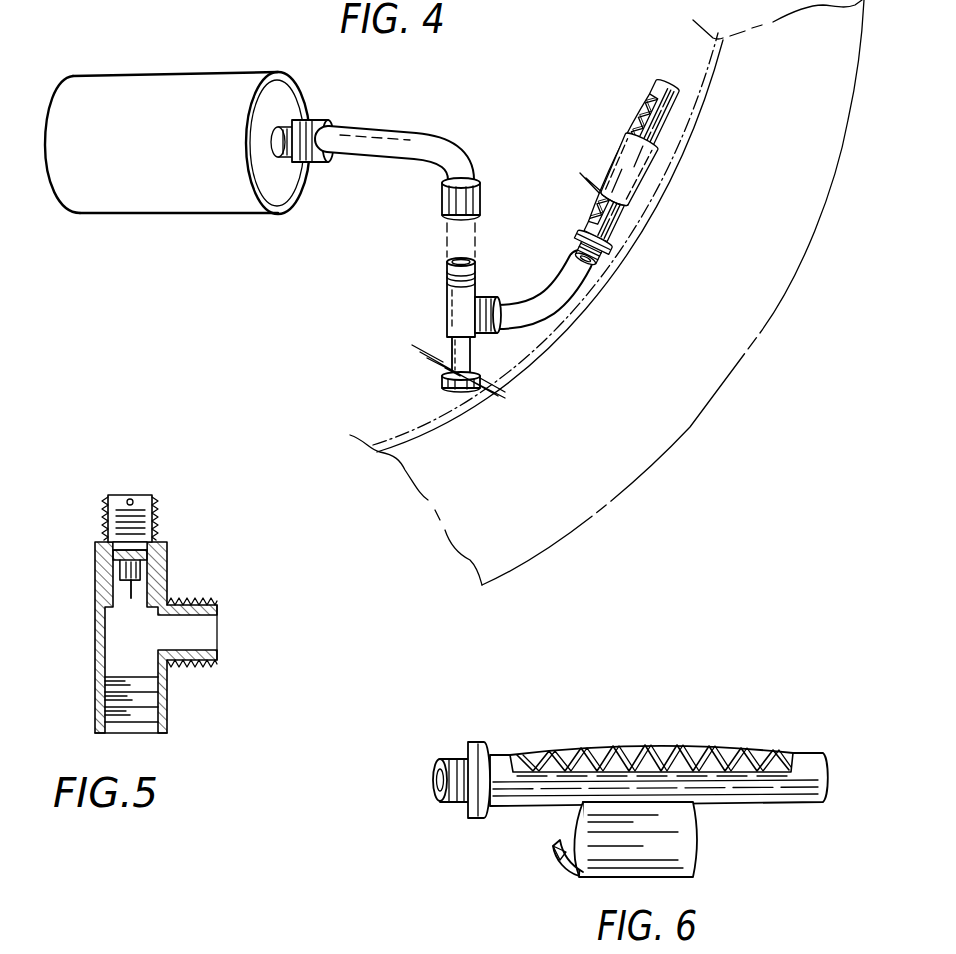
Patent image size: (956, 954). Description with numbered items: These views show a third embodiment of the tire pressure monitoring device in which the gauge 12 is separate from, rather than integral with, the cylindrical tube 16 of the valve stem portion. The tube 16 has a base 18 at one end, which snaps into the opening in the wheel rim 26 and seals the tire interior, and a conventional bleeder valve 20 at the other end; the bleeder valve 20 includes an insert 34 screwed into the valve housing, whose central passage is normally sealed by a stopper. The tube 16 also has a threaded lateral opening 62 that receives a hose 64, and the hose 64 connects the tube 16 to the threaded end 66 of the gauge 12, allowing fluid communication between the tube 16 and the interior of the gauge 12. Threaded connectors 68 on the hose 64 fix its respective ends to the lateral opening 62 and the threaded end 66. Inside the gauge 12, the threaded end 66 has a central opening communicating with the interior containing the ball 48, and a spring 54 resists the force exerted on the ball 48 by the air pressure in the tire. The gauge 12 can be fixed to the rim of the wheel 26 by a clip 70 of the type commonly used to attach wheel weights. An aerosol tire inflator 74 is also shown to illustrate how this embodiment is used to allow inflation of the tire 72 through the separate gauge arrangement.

In FIG. 4, the gauge portion 12 is at (703, 100).
In FIG. 6, the gauge portion 12 is at (803, 750).
In FIG. 5, the cylindrical tube 16 is at (95, 655).
In FIG. 5, the base 18 is at (160, 695).
In FIG. 5, the bleeder valve 20 is at (157, 495).
In FIG. 4, the wheel rim 26 is at (530, 360).
In FIG. 5, the insert 34 is at (105, 530).
In FIG. 6, the ball 48 is at (543, 747).
In FIG. 6, the spring 54 is at (693, 745).
In FIG. 5, the lateral opening 62 is at (190, 605).
In FIG. 4, the hose 64 is at (557, 313).
In FIG. 6, the threaded end 66 is at (463, 757).
In FIG. 4, the threaded connectors 68 is at (495, 318).
In FIG. 4, the clip 70 is at (680, 185).
In FIG. 6, the clip 70 is at (700, 833).
In FIG. 4, the tire 72 is at (737, 333).
In FIG. 4, the aerosol tire inflator 74 is at (160, 193).